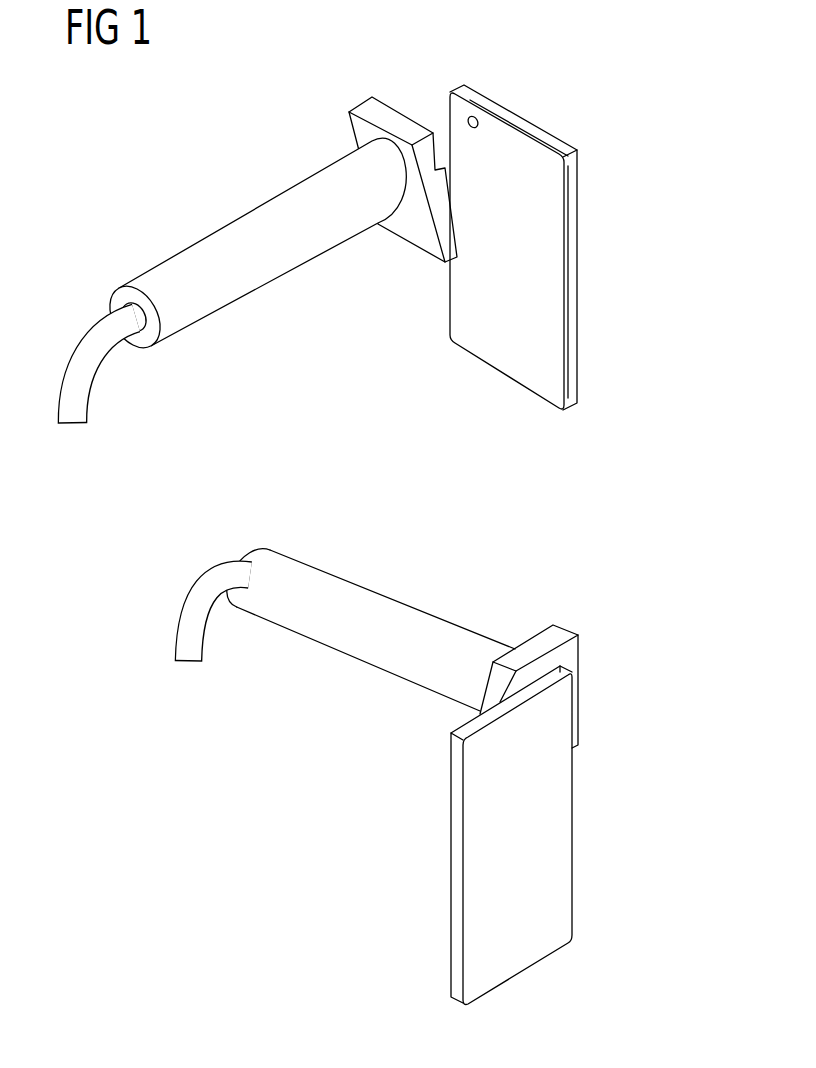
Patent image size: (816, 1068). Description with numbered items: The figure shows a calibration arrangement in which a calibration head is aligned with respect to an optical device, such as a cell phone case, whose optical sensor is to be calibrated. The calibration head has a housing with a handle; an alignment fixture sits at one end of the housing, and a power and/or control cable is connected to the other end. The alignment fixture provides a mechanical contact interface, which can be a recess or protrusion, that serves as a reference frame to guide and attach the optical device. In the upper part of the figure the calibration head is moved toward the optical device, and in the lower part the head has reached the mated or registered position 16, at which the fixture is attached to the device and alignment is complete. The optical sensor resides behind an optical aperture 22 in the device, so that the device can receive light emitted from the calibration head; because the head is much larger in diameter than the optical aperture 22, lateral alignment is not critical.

The mated or registered position 16 is at (560, 703).
The optical aperture 22 is at (480, 117).